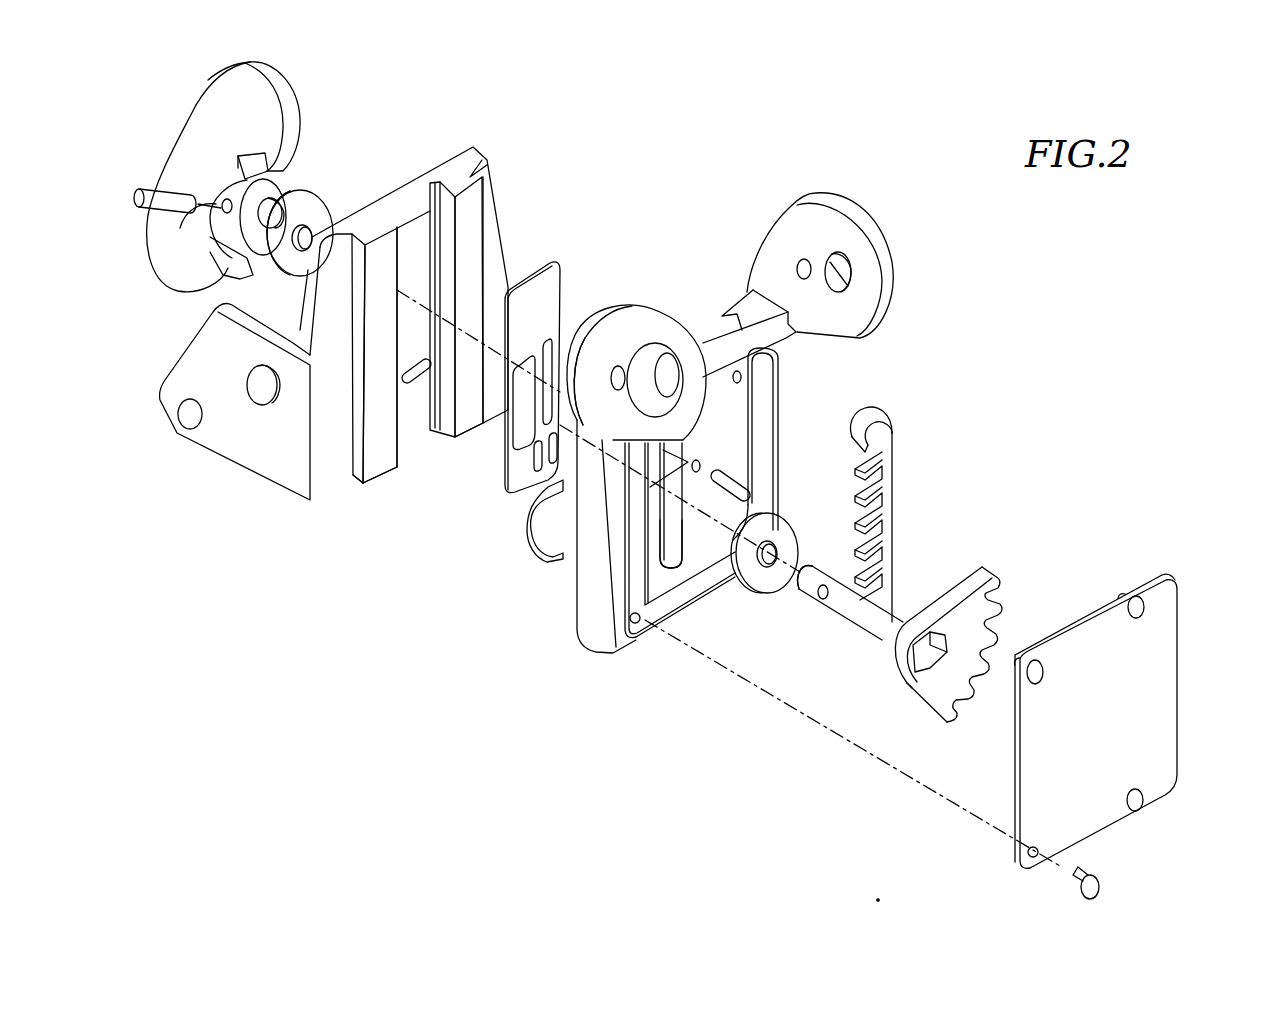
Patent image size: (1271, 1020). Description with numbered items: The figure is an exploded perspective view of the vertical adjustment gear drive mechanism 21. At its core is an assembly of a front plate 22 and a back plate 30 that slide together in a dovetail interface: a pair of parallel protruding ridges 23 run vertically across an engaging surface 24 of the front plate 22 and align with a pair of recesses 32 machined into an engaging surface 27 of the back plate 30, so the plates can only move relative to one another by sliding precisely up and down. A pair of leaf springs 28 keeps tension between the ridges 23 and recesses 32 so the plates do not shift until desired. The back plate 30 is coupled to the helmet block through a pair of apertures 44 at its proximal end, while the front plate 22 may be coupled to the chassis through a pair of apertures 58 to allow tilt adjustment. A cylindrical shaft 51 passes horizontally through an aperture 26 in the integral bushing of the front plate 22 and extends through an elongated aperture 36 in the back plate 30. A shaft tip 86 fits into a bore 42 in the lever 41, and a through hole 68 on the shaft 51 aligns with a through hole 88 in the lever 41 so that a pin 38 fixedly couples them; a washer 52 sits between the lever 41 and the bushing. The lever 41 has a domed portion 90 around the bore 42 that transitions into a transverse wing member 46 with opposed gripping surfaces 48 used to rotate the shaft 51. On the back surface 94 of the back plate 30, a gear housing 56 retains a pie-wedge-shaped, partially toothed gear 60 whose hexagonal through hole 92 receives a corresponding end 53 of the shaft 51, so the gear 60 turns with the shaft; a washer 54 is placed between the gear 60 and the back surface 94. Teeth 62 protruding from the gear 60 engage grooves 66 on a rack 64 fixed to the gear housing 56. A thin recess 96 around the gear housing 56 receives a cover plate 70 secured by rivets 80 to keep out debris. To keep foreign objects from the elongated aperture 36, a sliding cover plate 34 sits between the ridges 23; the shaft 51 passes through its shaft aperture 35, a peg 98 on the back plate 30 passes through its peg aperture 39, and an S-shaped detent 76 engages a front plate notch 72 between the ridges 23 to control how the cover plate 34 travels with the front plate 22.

The gear drive mechanism 21 is at (438, 562).
The front plate 22 is at (237, 446).
The protruding ridges 23 is at (489, 159).
The engaging surface 24 is at (472, 208).
The aperture 26 is at (400, 283).
The engaging surface 27 is at (722, 316).
The leaf springs 28 is at (547, 540).
The back plate 30 is at (725, 459).
The recesses 32 is at (705, 338).
The sliding cover plate 34 is at (495, 382).
The shaft aperture 35 is at (537, 447).
The elongated aperture 36 is at (670, 555).
The pin 38 is at (181, 196).
The peg aperture 39 is at (557, 450).
The lever 41 is at (236, 85).
The bore 42 is at (293, 180).
The apertures 44 is at (832, 253).
The wing member 46 is at (287, 89).
The gripping surfaces 48 is at (199, 151).
The cylindrical shaft 51 is at (888, 630).
The washer 52 is at (313, 207).
The end of shaft 53 is at (940, 650).
The washer 54 is at (782, 529).
The gear housing 56 is at (657, 578).
The apertures 58 is at (188, 413).
The partially toothed gear 60 is at (967, 629).
The teeth 62 is at (996, 603).
The rack 64 is at (939, 508).
The grooves 66 is at (870, 517).
The through hole 68 is at (818, 590).
The cover plate 70 is at (1140, 633).
The front plate notch 72 is at (421, 380).
The S-shaped detent 76 is at (605, 362).
The rivets 80 is at (1095, 877).
The shaft tip 86 is at (803, 580).
The through hole 88 is at (222, 208).
The domed portion 90 is at (234, 167).
The through hole 92 is at (910, 688).
The back surface 94 is at (623, 642).
The thin recess 96 is at (780, 372).
The peg 98 is at (735, 484).